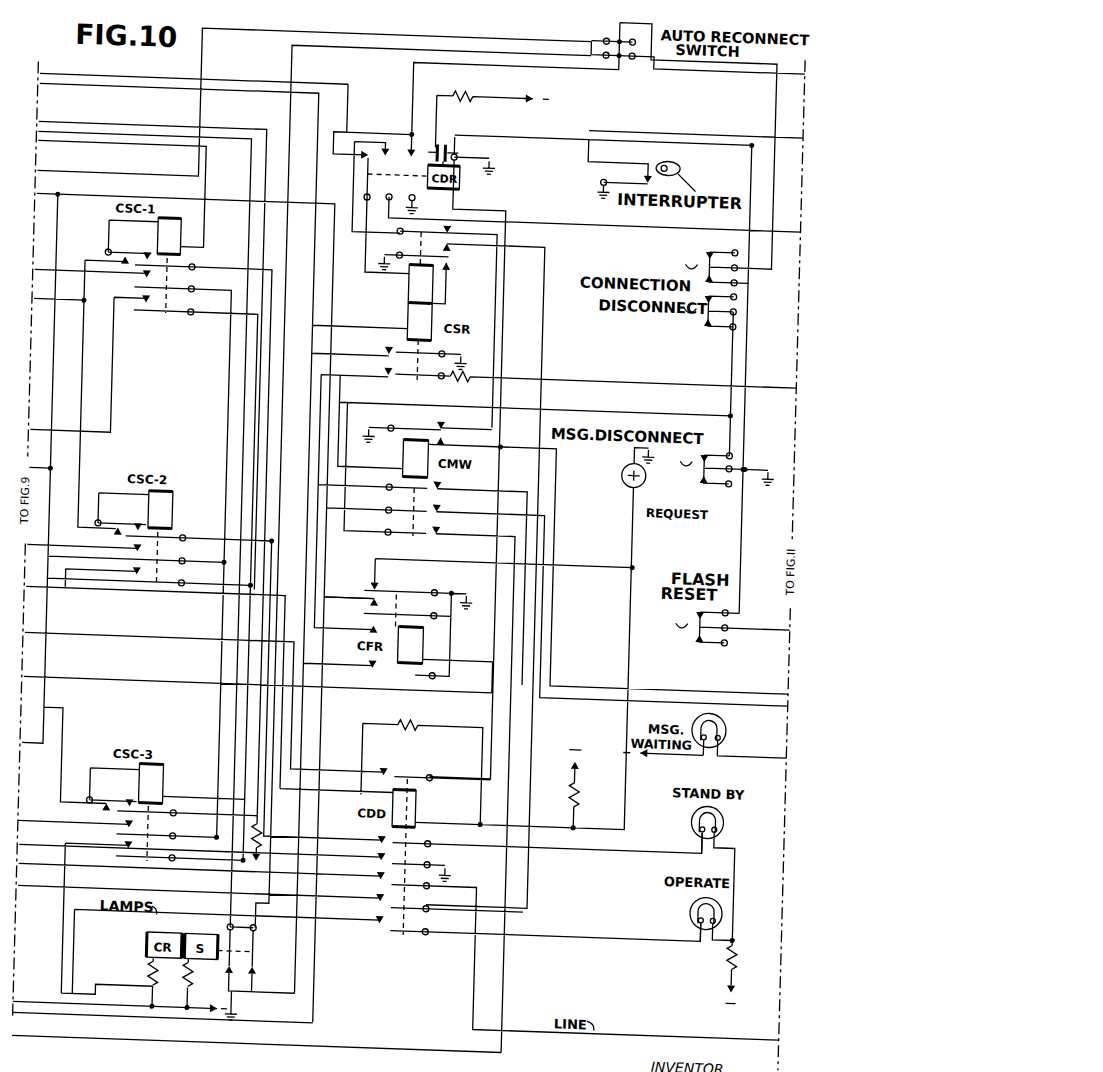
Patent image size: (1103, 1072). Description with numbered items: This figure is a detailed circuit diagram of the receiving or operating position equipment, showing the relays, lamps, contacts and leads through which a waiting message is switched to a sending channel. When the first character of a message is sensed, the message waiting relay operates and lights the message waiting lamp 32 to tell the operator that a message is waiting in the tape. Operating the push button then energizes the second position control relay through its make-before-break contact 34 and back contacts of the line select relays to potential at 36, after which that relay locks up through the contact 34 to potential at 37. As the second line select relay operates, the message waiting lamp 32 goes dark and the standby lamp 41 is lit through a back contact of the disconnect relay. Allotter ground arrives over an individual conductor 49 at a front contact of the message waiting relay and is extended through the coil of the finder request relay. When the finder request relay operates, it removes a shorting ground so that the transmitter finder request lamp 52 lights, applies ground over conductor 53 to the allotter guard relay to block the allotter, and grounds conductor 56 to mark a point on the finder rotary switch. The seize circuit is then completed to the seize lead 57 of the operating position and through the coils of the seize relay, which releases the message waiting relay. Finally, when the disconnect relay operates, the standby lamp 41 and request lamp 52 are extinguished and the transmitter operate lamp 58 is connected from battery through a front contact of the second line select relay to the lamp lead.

The seize lead 57 is at (350, 71).
The make-before-break contact 34 is at (146, 533).
The conductor 56 is at (380, 588).
The transmitter finder request lamp 52 is at (641, 463).
The message waiting lamp 32 is at (745, 702).
The standby lamp 41 is at (739, 808).
The transmitter operate lamp 58 is at (714, 884).
The potential 37 is at (280, 853).
The conductor 53 is at (342, 992).
The potential 36 is at (251, 1013).
The individual conductor 49 is at (368, 1035).